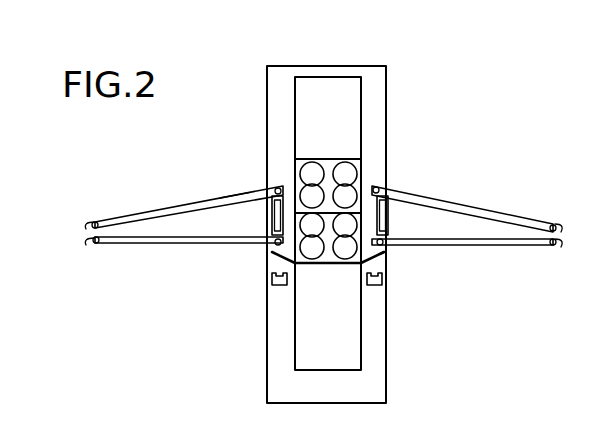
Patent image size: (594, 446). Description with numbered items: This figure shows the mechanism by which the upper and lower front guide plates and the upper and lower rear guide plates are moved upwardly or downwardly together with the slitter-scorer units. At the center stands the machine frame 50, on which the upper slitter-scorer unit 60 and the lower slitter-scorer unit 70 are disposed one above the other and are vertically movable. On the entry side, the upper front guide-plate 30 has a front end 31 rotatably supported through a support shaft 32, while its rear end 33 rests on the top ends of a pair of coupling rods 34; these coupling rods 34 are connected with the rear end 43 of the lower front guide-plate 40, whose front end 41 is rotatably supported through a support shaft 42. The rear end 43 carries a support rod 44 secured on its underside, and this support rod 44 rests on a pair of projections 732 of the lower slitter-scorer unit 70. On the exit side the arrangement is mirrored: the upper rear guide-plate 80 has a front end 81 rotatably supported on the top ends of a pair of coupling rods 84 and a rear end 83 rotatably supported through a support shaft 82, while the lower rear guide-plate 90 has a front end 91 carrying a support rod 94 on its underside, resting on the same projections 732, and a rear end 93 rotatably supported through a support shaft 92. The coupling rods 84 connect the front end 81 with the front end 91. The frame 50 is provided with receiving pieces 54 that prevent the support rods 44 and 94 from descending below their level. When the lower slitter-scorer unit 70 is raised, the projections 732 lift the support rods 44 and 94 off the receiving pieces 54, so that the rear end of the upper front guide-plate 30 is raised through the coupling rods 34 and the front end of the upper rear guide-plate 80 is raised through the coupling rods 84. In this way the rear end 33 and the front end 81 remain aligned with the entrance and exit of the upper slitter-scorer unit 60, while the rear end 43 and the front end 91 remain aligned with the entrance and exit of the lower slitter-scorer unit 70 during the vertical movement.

The upper front guide-plate 30 is at (187, 200).
The front end 31 is at (90, 226).
The support shaft 32 is at (97, 221).
The rear end 33 is at (288, 180).
The coupling rods 34 is at (232, 193).
The lower front guide-plate 40 is at (177, 248).
The front end 41 is at (90, 245).
The support shaft 42 is at (97, 246).
The rear end 43 is at (275, 244).
The support rod 44 is at (277, 252).
The machine frame 50 is at (281, 99).
The receiving pieces 54 is at (278, 288).
The upper slitter-scorer unit 60 is at (327, 166).
The lower slitter-scorer unit 70 is at (328, 262).
The projections 732 is at (298, 272).
The upper rear guide-plate 80 is at (482, 205).
The front end 81 is at (368, 187).
The support shaft 82 is at (552, 225).
The rear end 83 is at (561, 227).
The coupling rods 84 is at (389, 206).
The lower rear guide-plate 90 is at (481, 250).
The front end 91 is at (384, 229).
The support shaft 92 is at (553, 245).
The rear end 93 is at (560, 244).
The support rod 94 is at (386, 252).